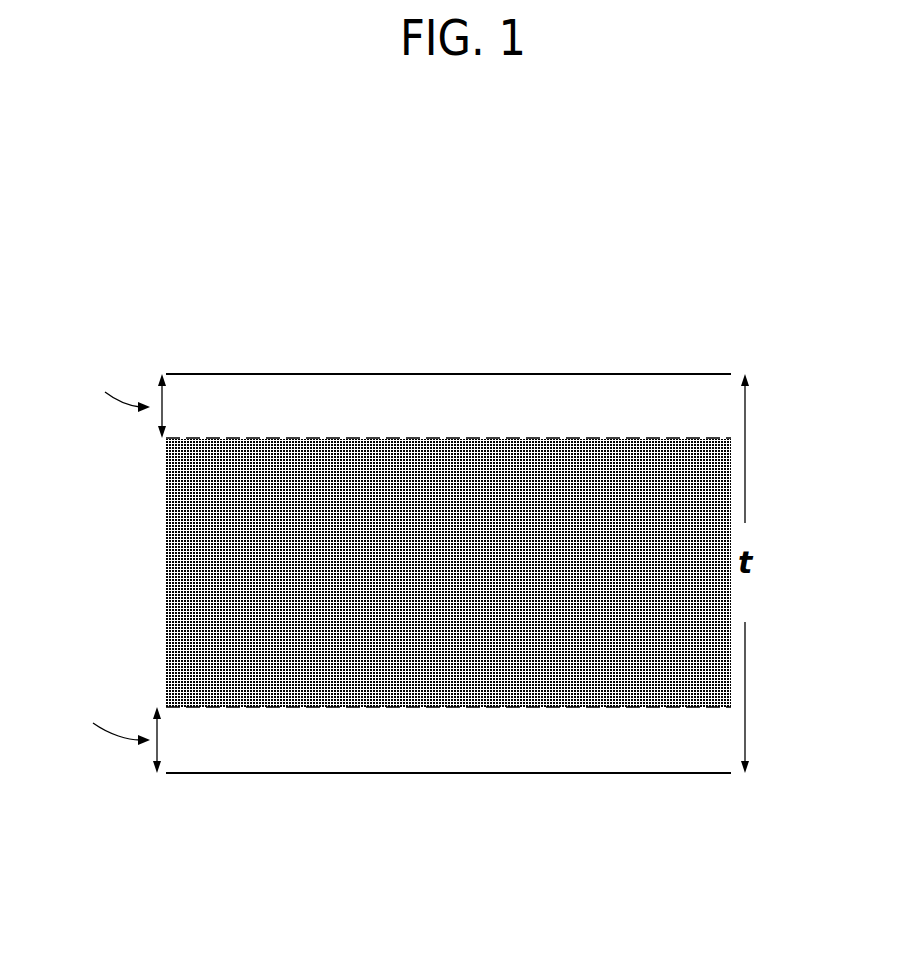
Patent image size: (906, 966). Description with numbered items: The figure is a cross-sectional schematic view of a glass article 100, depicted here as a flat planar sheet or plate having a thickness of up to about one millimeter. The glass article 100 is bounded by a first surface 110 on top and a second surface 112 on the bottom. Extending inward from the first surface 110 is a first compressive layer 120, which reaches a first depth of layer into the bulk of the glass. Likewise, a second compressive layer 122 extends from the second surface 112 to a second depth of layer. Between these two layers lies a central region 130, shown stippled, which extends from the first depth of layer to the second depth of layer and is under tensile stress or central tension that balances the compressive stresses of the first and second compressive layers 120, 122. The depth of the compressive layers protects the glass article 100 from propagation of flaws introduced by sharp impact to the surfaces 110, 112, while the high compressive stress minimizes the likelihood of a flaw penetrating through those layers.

The glass article 100 is at (463, 184).
The first surface 110 is at (542, 364).
The second surface 112 is at (533, 786).
The first compressive layer 120 is at (270, 395).
The second compressive layer 122 is at (282, 754).
The central region 130 is at (172, 573).